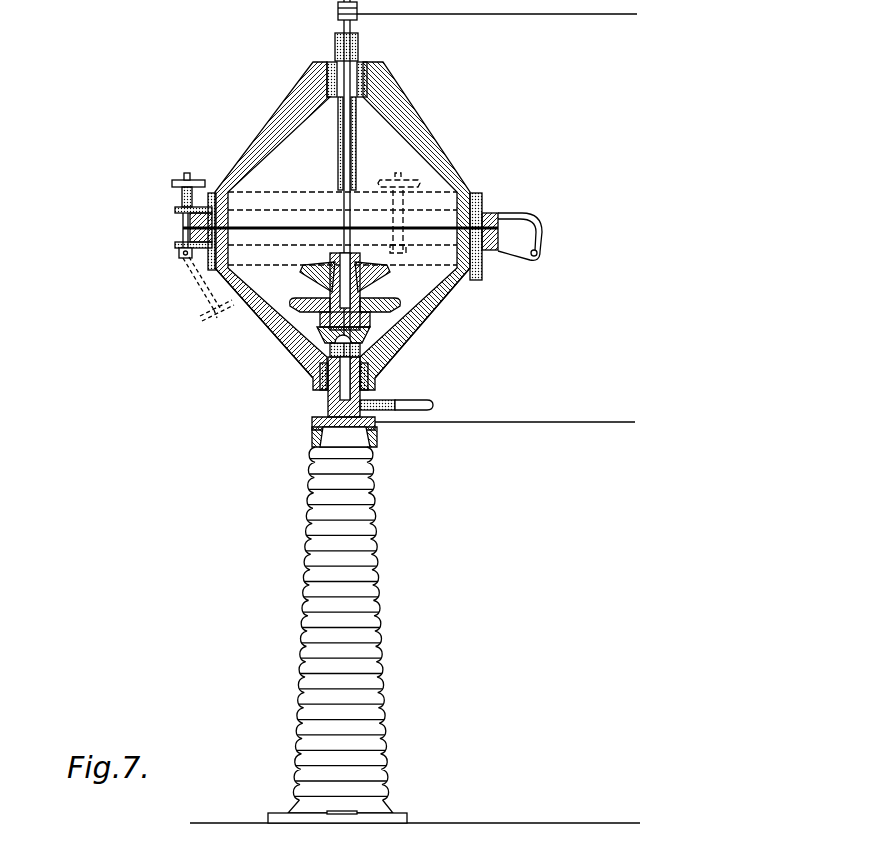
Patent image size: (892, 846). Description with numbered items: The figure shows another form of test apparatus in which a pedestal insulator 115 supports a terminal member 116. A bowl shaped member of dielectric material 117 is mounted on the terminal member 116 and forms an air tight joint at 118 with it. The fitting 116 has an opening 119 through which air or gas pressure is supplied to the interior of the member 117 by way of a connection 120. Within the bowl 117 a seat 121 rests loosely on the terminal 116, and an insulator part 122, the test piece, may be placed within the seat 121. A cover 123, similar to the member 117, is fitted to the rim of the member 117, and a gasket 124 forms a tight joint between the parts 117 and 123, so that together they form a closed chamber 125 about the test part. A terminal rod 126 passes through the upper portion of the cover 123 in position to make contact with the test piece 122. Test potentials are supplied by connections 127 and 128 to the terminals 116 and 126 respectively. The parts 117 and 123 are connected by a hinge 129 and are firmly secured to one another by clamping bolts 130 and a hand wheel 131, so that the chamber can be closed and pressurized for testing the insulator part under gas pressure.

The pedestal insulator 115 is at (355, 672).
The terminal member 116 is at (328, 413).
The bowl shaped member of dielectric material 117 is at (412, 338).
The air tight joint 118 is at (377, 382).
The opening 119 is at (333, 395).
The connection 120 is at (413, 403).
The seat 121 is at (330, 347).
The insulator part 122 is at (360, 310).
The cover 123 is at (435, 143).
The gasket 124 is at (183, 229).
The closed chamber 125 is at (296, 226).
The terminal rod 126 is at (345, 205).
The connection 127 is at (498, 424).
The connection 128 is at (515, 15).
The hinge 129 is at (537, 232).
The clamping bolts 130 is at (185, 225).
The hand wheel 131 is at (170, 182).